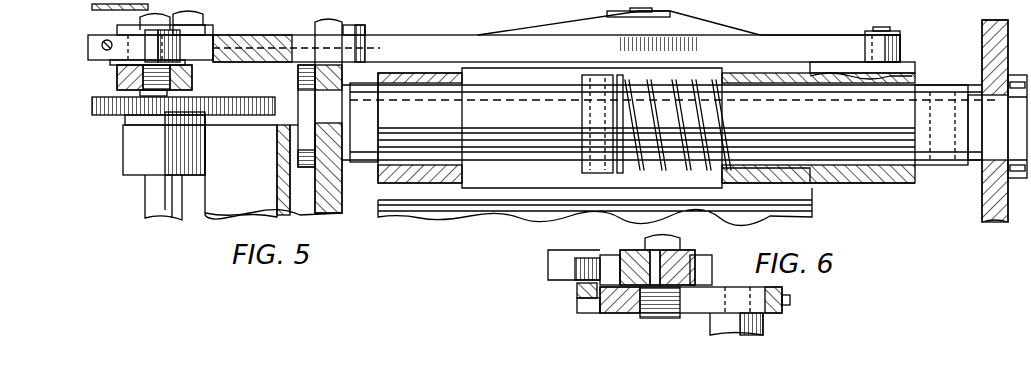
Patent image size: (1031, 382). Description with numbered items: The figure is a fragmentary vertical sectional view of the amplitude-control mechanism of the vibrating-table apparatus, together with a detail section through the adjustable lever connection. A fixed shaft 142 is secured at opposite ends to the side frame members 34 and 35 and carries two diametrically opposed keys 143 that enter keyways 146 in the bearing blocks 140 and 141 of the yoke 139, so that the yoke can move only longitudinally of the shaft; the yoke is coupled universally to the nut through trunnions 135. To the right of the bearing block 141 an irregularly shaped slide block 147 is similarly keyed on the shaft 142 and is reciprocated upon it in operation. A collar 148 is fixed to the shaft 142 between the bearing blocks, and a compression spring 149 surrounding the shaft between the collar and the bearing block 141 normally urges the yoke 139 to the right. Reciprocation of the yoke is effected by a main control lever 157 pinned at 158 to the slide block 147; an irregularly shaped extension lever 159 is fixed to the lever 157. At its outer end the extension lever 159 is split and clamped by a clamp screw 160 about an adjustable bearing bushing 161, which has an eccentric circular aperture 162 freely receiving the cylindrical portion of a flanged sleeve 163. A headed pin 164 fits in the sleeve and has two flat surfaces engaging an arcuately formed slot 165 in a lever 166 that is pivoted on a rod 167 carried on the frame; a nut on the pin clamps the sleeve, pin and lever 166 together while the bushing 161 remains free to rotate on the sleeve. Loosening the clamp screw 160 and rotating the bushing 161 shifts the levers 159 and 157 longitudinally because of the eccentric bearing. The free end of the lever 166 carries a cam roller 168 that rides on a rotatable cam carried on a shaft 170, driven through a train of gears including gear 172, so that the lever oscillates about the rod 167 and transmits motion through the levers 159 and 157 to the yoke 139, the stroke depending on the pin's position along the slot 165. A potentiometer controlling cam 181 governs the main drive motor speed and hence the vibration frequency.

In FIG. 5, the side frame member 34 is at (333, 200).
In FIG. 5, the side frame member 35 is at (981, 33).
In FIG. 5, the trunnion 135 is at (678, 12).
In FIG. 5, the yoke 139 is at (527, 30).
In FIG. 5, the bearing block 140 is at (455, 178).
In FIG. 5, the bearing block 141 is at (758, 182).
In FIG. 5, the fixed shaft 142 is at (838, 178).
In FIG. 5, the key 143 is at (948, 80).
In FIG. 5, the keyway 146 is at (785, 85).
In FIG. 5, the slide block 147 is at (892, 185).
In FIG. 5, the collar 148 is at (582, 113).
In FIG. 5, the compression spring 149 is at (648, 158).
In FIG. 5, the main control lever 157 is at (776, 45).
In FIG. 5, the pin connection 158 is at (870, 33).
In FIG. 5, the extension lever 159 is at (300, 35).
In FIG. 6, the extension lever 159 is at (700, 283).
In FIG. 5, the clamp screw 160 is at (88, 50).
In FIG. 5, the adjustable bearing bushing 161 is at (145, 37).
In FIG. 6, the adjustable bearing bushing 161 is at (648, 252).
In FIG. 5, the circular aperture 162 is at (181, 36).
In FIG. 6, the circular aperture 162 is at (700, 246).
In FIG. 6, the sleeve 163 is at (612, 255).
In FIG. 5, the headed pin 164 is at (145, 82).
In FIG. 6, the headed pin 164 is at (655, 300).
In FIG. 5, the arcuately formed slot 165 is at (165, 118).
In FIG. 6, the arcuately formed slot 165 is at (712, 305).
In FIG. 5, the lever 166 is at (190, 78).
In FIG. 6, the lever 166 is at (615, 312).
In FIG. 6, the rod 167 is at (788, 297).
In FIG. 6, the cam roller 168 is at (578, 268).
In FIG. 5, the shaft 170 is at (150, 193).
In FIG. 5, the gear 172 is at (92, 106).
In FIG. 5, the potentiometer controlling cam 181 is at (97, 12).